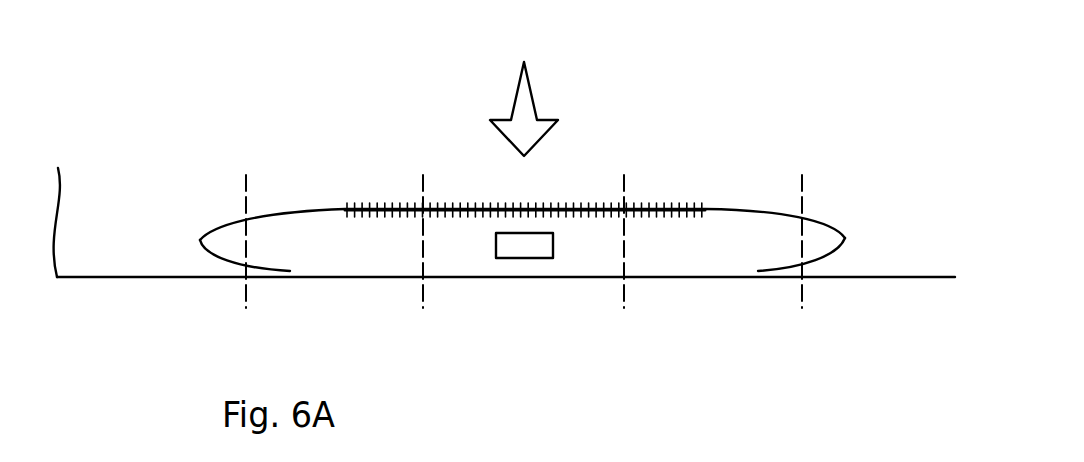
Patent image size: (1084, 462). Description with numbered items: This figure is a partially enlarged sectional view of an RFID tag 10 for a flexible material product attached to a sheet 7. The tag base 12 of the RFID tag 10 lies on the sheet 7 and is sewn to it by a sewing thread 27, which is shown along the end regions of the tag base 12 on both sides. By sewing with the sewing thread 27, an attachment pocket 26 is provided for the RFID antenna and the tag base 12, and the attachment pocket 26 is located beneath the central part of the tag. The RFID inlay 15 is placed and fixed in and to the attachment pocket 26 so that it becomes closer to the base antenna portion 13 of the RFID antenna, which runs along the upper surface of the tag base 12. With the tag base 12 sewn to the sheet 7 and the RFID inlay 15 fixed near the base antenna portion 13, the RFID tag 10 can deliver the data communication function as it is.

The sheet 7 is at (862, 278).
The RFID tag for a flexible material product 10 is at (820, 212).
The tag base 12 is at (846, 238).
The base antenna portion 13 is at (490, 194).
The RFID inlay 15 is at (530, 245).
The attachment pocket 26 is at (523, 268).
The sewing thread 27 is at (423, 200).